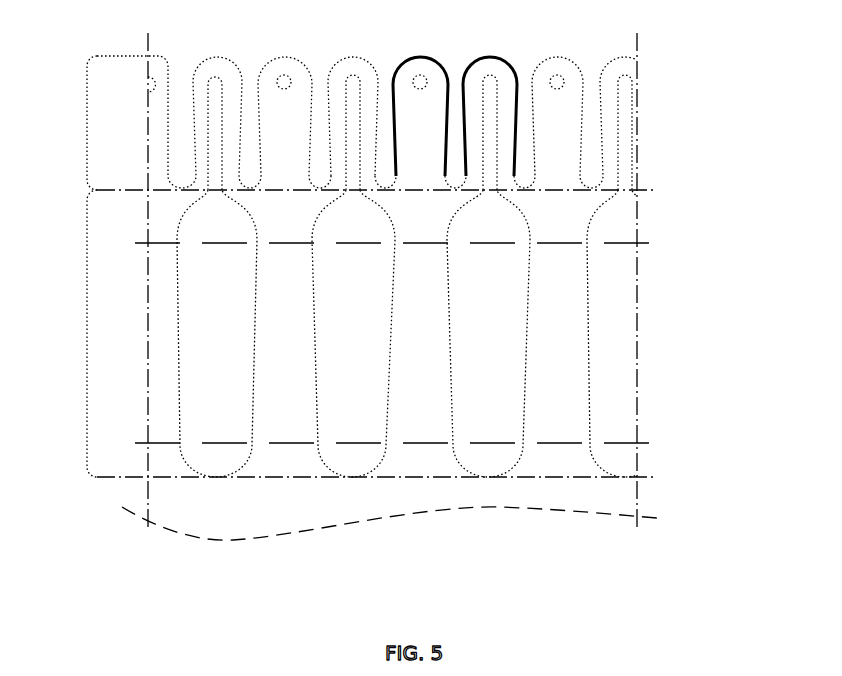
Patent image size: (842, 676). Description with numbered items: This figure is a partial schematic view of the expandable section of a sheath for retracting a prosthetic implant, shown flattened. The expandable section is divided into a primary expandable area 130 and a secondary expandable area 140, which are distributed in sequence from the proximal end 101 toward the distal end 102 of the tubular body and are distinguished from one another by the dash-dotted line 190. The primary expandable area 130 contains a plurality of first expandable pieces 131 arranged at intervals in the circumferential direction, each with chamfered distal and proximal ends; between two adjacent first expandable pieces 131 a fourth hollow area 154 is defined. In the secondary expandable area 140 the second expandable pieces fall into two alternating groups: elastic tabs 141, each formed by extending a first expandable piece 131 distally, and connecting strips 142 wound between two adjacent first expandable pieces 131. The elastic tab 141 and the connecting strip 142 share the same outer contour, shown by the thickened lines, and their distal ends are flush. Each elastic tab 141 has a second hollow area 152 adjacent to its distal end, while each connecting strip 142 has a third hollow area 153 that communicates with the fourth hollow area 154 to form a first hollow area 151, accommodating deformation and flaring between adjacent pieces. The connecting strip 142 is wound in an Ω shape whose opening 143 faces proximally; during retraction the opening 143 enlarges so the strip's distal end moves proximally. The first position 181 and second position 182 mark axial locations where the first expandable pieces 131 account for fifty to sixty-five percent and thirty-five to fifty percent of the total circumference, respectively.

The proximal end 101 is at (265, 558).
The distal end 102 is at (252, 33).
The primary expandable area 130 is at (88, 334).
The first expandable piece 131 is at (420, 335).
The secondary expandable area 140 is at (88, 113).
The elastic tab 141 is at (417, 65).
The connecting strip 142 is at (352, 63).
The opening 143 is at (217, 106).
The first hollow area 151 is at (715, 135).
The second hollow area 152 is at (562, 79).
The third hollow area 153 is at (487, 113).
The fourth hollow area 154 is at (505, 272).
The first position 181 is at (162, 442).
The second position 182 is at (162, 247).
The dash-dotted line 190 is at (640, 190).